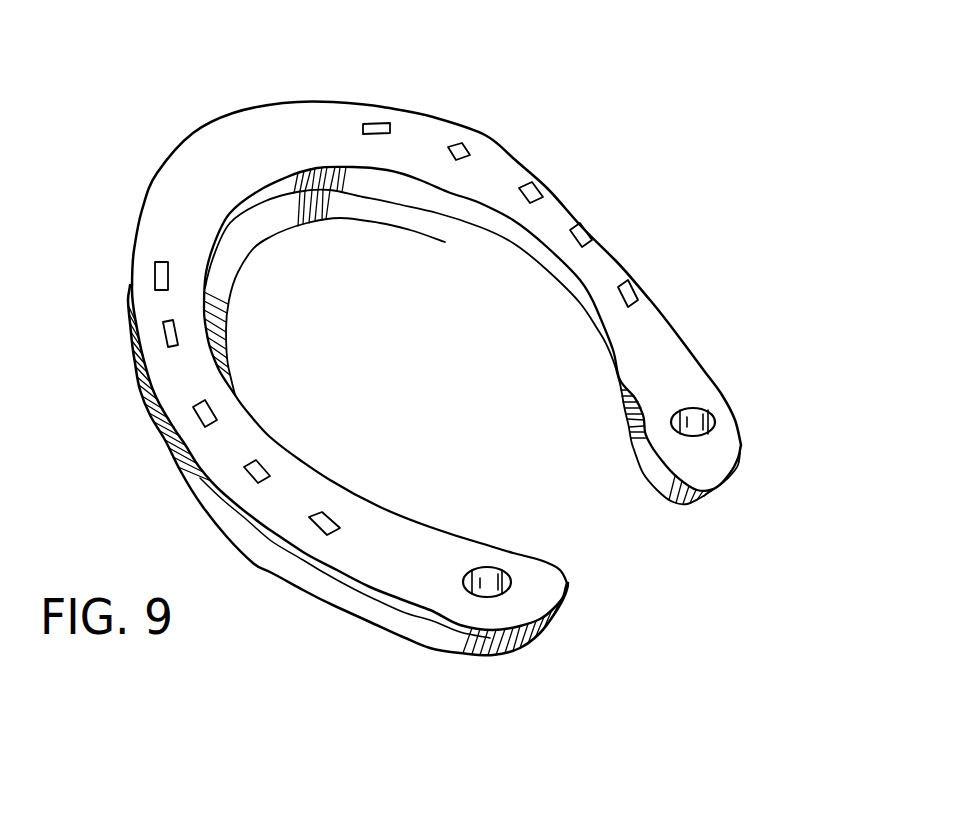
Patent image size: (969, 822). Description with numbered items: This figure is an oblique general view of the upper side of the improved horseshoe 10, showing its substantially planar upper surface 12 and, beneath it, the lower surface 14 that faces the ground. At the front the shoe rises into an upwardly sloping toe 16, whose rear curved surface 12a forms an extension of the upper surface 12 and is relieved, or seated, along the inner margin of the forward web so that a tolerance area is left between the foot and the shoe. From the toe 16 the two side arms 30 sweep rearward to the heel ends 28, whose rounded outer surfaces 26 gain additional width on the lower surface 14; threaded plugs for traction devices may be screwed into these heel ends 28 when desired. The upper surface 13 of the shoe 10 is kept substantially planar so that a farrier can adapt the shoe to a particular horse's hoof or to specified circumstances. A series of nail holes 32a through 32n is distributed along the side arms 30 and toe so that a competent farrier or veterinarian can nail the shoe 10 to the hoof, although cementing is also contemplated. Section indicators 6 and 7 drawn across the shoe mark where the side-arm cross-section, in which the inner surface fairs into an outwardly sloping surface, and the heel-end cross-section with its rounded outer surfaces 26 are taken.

The horseshoe 10 is at (605, 159).
The upper surface 12 is at (488, 170).
The rear curved surface (inner margin of upper surface) 12a is at (317, 173).
The upper surface 13 is at (197, 188).
The lower surface 14 is at (403, 638).
The upwardly sloping toe 16 is at (221, 79).
The rounded outer surfaces 26 is at (542, 627).
The heel ends 28 is at (685, 447).
The side arms 30 is at (618, 238).
The nail hole 32a is at (316, 516).
The nail hole 32n is at (635, 293).
The section line for FIG. 6 is at (333, 437).
The section line for FIG. 7 is at (632, 429).